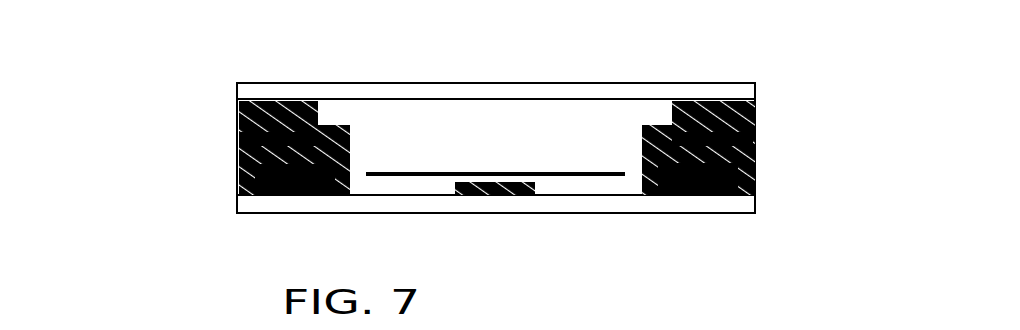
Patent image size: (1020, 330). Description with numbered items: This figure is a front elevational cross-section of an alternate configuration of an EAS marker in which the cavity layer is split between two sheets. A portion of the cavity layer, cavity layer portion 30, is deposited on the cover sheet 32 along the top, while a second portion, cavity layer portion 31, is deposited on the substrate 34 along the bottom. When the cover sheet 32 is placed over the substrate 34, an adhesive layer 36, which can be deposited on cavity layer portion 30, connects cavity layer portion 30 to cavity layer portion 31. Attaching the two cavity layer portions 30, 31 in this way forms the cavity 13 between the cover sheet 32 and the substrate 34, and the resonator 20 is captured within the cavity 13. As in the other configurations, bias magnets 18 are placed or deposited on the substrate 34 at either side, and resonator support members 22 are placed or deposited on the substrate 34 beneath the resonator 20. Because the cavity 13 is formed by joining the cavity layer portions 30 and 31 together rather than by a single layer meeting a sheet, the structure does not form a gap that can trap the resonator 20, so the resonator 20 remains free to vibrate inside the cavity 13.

The cavity 13 is at (523, 128).
The bias magnets 18 is at (298, 195).
The resonator 20 is at (428, 173).
The resonator support members 22 is at (498, 197).
The cavity layer portion 30 is at (237, 115).
The cavity layer portion 31 is at (237, 185).
The cover sheet 32 is at (725, 88).
The substrate 34 is at (717, 205).
The adhesive layer 36 is at (237, 142).